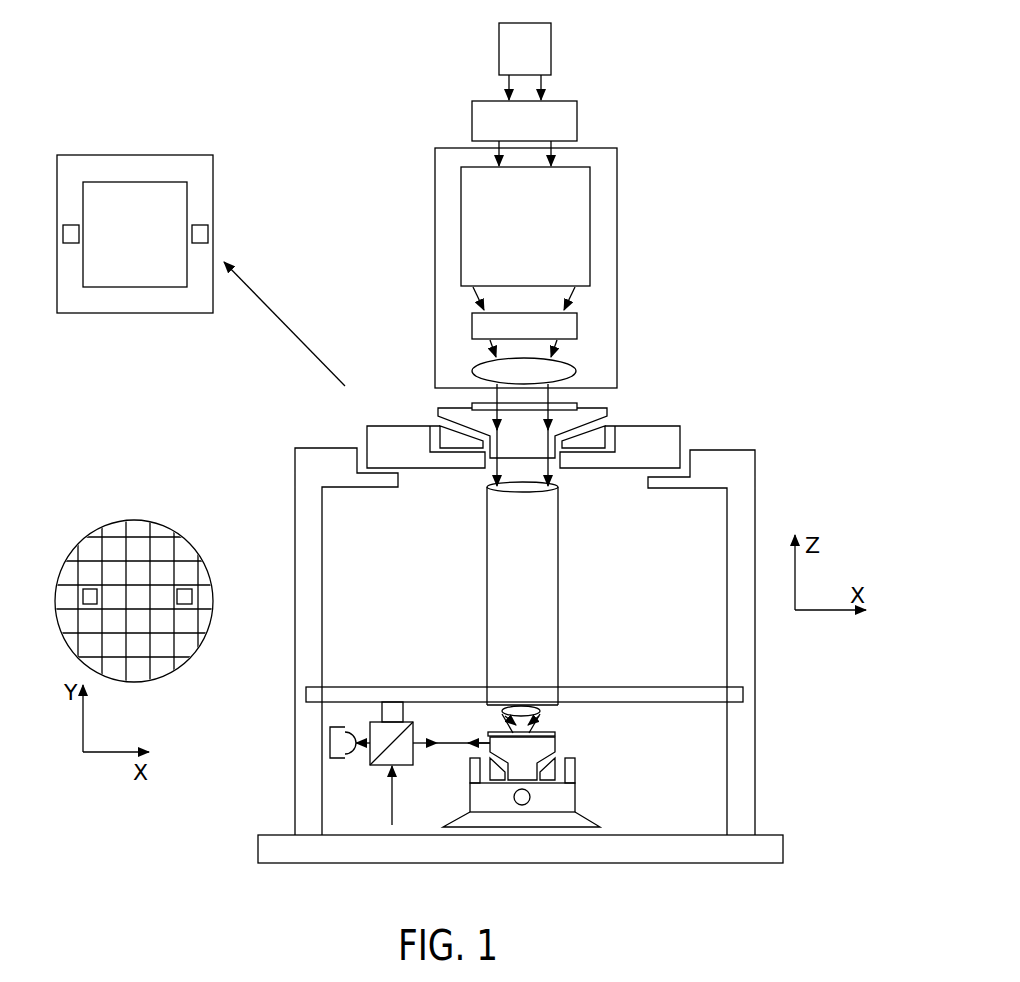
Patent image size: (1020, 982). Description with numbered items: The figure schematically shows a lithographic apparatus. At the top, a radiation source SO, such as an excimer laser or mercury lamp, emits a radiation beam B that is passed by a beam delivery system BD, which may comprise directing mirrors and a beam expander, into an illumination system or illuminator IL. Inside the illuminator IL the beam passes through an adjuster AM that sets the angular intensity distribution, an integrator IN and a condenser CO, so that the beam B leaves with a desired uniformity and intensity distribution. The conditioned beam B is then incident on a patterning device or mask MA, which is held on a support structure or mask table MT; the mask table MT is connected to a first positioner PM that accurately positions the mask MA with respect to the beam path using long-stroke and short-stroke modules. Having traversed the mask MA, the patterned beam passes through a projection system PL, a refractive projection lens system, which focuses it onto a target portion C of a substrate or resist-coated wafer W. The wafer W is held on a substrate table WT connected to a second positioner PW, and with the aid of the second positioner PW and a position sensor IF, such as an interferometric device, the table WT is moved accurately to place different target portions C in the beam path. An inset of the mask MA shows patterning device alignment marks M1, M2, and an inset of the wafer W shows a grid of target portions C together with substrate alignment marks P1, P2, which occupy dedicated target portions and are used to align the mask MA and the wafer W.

The radiation source SO is at (551, 52).
The beam delivery system BD is at (577, 127).
The illumination system (illuminator) IL is at (617, 175).
The adjuster AM is at (590, 233).
The integrator IN is at (577, 323).
The condenser CO is at (575, 373).
The radiation beam B is at (523, 395).
The patterning device (mask) MA is at (470, 405).
The support structure (mask table) MT is at (610, 416).
The first positioner PM is at (365, 432).
The projection system PL is at (560, 578).
The substrate (wafer) W is at (224, 594).
The substrate table (wafer table) WT is at (558, 745).
The second positioner PW is at (567, 797).
The position sensor IF is at (362, 768).
The patterning device alignment mark M1 is at (200, 225).
The patterning device alignment mark M2 is at (72, 225).
The substrate alignment mark P1 is at (86, 589).
The substrate alignment mark P2 is at (184, 589).
The target portion C is at (138, 585).